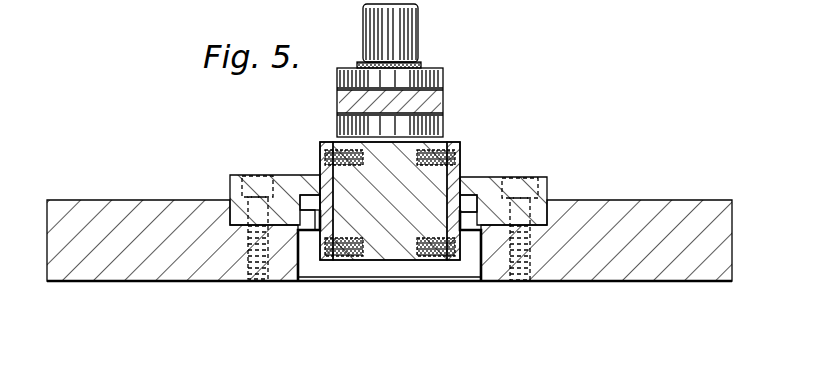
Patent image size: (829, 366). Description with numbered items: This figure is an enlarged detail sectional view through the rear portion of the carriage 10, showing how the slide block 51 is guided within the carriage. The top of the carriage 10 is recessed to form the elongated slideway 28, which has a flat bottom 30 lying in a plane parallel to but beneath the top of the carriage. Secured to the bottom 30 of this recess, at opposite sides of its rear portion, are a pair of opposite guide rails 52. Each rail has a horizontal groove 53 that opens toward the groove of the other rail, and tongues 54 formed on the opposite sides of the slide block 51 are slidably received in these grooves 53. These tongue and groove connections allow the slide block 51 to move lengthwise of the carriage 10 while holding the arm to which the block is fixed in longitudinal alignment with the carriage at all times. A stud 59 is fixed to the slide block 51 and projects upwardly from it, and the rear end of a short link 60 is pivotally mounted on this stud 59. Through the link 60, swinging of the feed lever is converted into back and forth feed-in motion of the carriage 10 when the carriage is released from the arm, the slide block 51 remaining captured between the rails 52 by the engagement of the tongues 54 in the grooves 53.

The carriage 10 is at (660, 182).
The slideway 28 is at (238, 210).
The flat bottom 30 is at (547, 212).
The slide block 51 is at (379, 254).
The guide rails 52 is at (252, 175).
The horizontal grooves 53 is at (306, 215).
The tongues 54 is at (306, 215).
The stud 59 is at (420, 36).
The link 60 is at (443, 104).